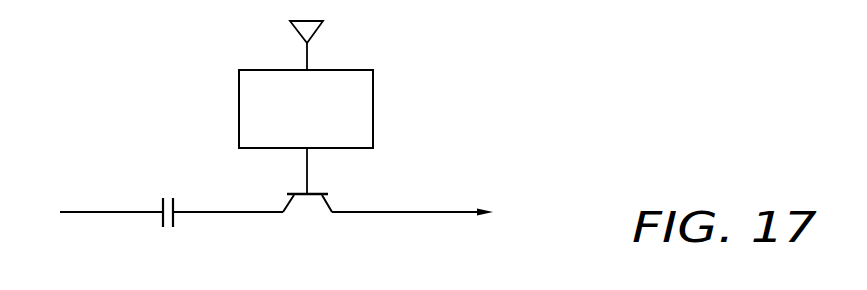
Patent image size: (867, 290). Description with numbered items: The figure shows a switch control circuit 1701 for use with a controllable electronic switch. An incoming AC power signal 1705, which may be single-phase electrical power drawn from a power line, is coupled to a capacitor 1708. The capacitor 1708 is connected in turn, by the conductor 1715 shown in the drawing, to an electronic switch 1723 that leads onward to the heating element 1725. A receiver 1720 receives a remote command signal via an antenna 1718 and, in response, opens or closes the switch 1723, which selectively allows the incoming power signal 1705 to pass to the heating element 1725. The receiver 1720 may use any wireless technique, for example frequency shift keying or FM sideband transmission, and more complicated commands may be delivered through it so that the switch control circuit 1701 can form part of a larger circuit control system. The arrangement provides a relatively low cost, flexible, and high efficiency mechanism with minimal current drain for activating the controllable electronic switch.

The switch control circuit 1701 is at (131, 118).
The incoming AC power signal 1705 is at (125, 212).
The capacitor 1708 is at (177, 204).
The conductor 1715 is at (207, 213).
The antenna 1718 is at (316, 33).
The receiver 1720 is at (373, 107).
The electronic switch 1723 is at (315, 192).
The heating element 1725 is at (437, 212).